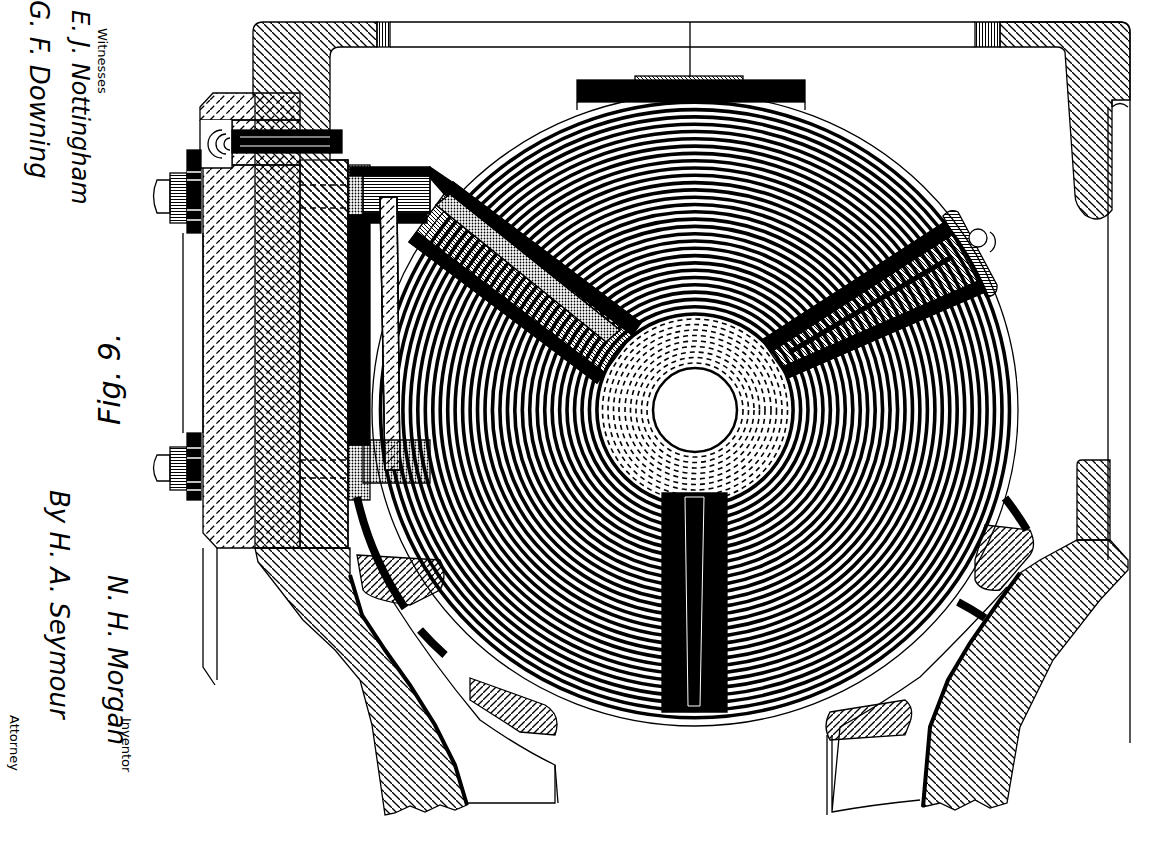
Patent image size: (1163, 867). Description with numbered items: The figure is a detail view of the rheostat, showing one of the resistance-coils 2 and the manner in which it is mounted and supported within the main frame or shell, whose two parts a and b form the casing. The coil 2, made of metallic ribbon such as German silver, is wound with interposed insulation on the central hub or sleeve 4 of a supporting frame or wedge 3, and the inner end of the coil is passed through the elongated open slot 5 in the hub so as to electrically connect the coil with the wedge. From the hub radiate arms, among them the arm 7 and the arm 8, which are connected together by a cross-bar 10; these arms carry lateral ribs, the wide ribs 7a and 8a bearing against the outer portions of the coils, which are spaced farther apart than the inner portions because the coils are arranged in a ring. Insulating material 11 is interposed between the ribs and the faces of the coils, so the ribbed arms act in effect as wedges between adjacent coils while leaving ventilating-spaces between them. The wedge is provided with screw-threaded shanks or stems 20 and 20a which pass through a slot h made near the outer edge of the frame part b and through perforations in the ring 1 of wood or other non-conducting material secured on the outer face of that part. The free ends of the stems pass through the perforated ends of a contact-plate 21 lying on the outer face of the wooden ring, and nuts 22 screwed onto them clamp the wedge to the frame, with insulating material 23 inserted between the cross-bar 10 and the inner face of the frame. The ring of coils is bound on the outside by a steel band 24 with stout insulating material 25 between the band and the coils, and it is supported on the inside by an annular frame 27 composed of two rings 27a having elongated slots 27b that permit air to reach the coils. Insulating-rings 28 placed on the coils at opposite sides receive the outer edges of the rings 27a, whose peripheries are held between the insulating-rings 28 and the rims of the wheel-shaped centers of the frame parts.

The ring 1 is at (215, 262).
The resistance-coil 2 is at (695, 410).
The supporting frame or wedge 3 is at (400, 322).
The central hub or sleeve 4 is at (715, 374).
The elongated open slot 5 is at (686, 360).
The radiating arm 7 is at (890, 280).
The lateral rib 7a is at (995, 326).
The radiating arm 8 is at (525, 282).
The lateral rib 8a is at (466, 200).
The cross-bar 10 is at (396, 329).
The insulating material 11 is at (680, 712).
The screw-threaded shank or stem 20 is at (157, 193).
The screw-threaded shank or stem 20a is at (157, 465).
The contact-plate 21 is at (185, 307).
The nut 22 is at (180, 333).
The insulating material 23 is at (346, 290).
The steel band 24 is at (689, 70).
The insulating material 25 is at (691, 85).
The annular frame 27 is at (699, 701).
The ring 27a is at (691, 725).
The elongated slot 27b is at (695, 594).
The insulating-ring 28 is at (372, 630).
The frame part a is at (1038, 416).
The frame part b is at (614, 418).
The slot h is at (296, 143).